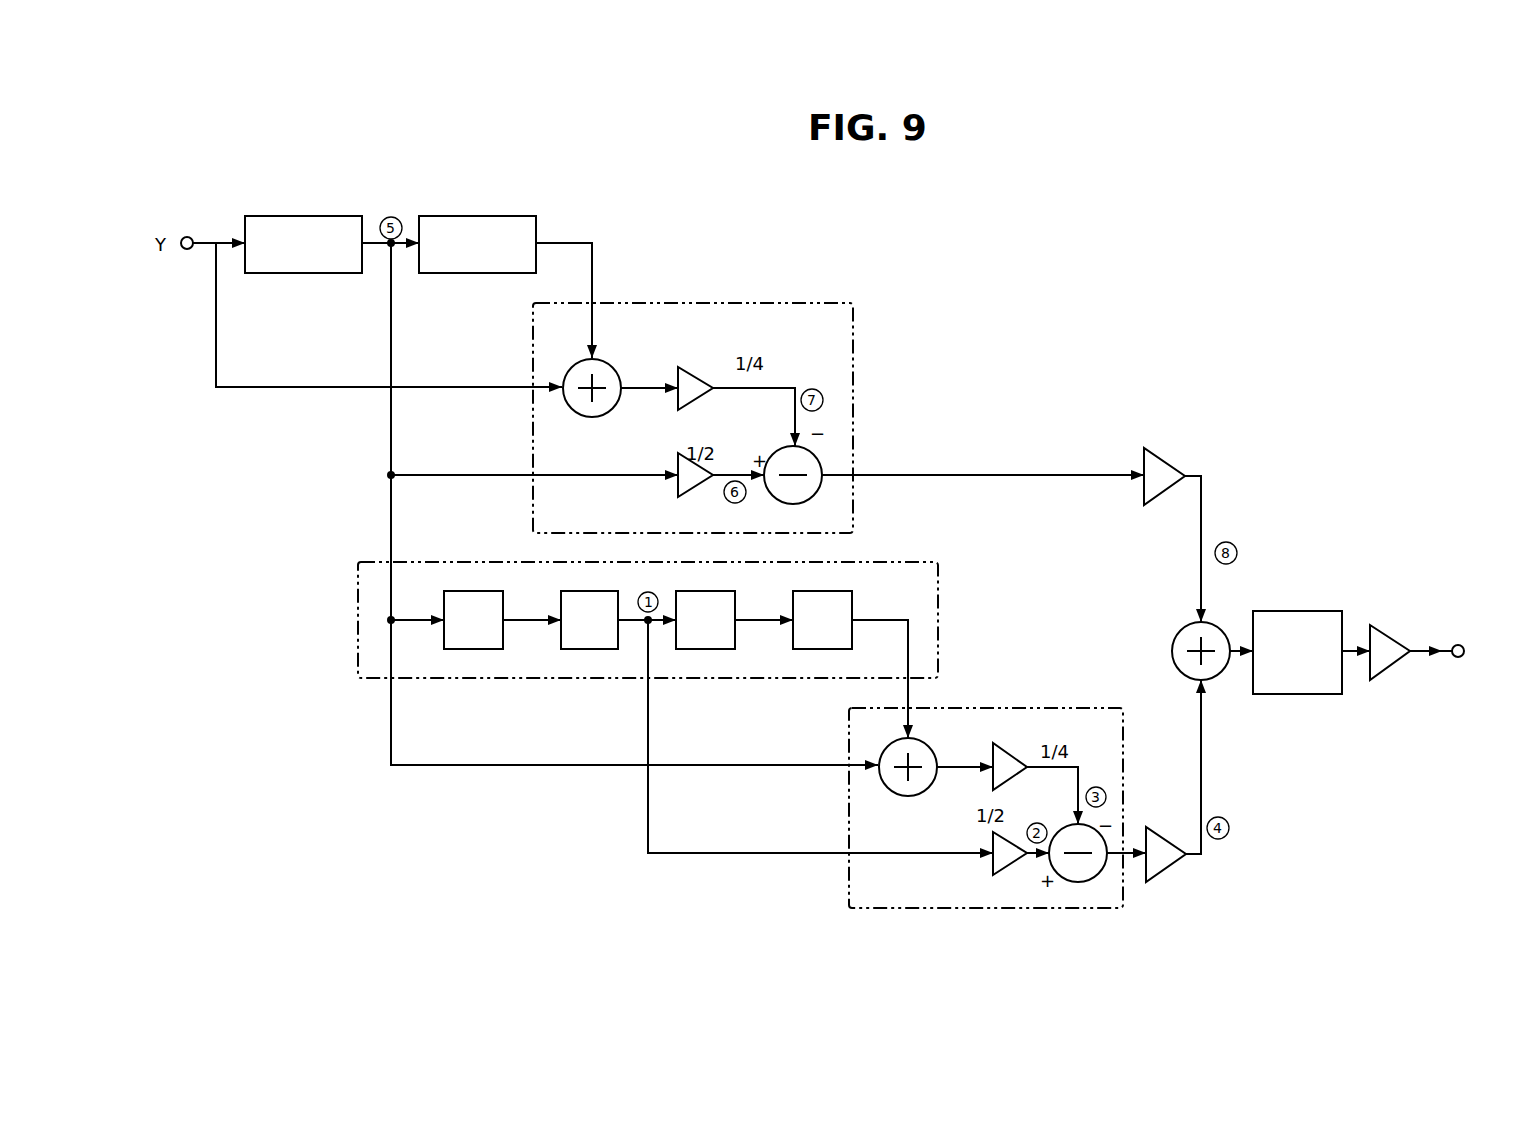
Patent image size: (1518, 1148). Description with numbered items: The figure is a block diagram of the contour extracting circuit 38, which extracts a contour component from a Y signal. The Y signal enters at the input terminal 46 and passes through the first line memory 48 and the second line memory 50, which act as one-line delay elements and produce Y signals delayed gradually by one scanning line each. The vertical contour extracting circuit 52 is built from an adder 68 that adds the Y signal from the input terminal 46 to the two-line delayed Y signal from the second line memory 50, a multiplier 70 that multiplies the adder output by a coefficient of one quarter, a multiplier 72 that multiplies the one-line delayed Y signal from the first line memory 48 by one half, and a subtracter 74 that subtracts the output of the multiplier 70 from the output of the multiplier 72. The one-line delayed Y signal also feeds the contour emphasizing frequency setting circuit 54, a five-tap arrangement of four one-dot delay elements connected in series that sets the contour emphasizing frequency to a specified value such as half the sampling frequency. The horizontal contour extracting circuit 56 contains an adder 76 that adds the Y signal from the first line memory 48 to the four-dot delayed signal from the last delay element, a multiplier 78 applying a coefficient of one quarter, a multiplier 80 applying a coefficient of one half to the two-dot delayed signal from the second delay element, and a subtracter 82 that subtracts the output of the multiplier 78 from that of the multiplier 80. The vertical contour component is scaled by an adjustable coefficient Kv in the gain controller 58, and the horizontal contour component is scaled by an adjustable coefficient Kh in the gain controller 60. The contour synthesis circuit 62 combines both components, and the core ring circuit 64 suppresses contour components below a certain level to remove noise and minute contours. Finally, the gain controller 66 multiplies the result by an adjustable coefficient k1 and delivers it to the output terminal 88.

The contour extracting circuit 38 is at (1000, 358).
The input terminal 46 is at (190, 237).
The first line memory 48 is at (312, 216).
The second line memory 50 is at (487, 216).
The vertical contour extracting circuit 52 is at (728, 298).
The contour emphasizing frequency setting circuit 54 is at (887, 562).
The horizontal contour extracting circuit 56 is at (1012, 708).
The gain controller 58 is at (1160, 458).
The gain controller 60 is at (1160, 835).
The contour synthesis circuit 62 is at (1185, 638).
The core ring circuit 64 is at (1330, 632).
The gain controller 66 is at (1378, 630).
The adder 68 is at (605, 383).
The multiplier 70 is at (690, 378).
The multiplier 72 is at (685, 486).
The subtracter 74 is at (785, 500).
The adder 76 is at (893, 782).
The multiplier 78 is at (992, 752).
The multiplier 80 is at (993, 860).
The subtracter 82 is at (1085, 870).
The output terminal 88 is at (1463, 644).